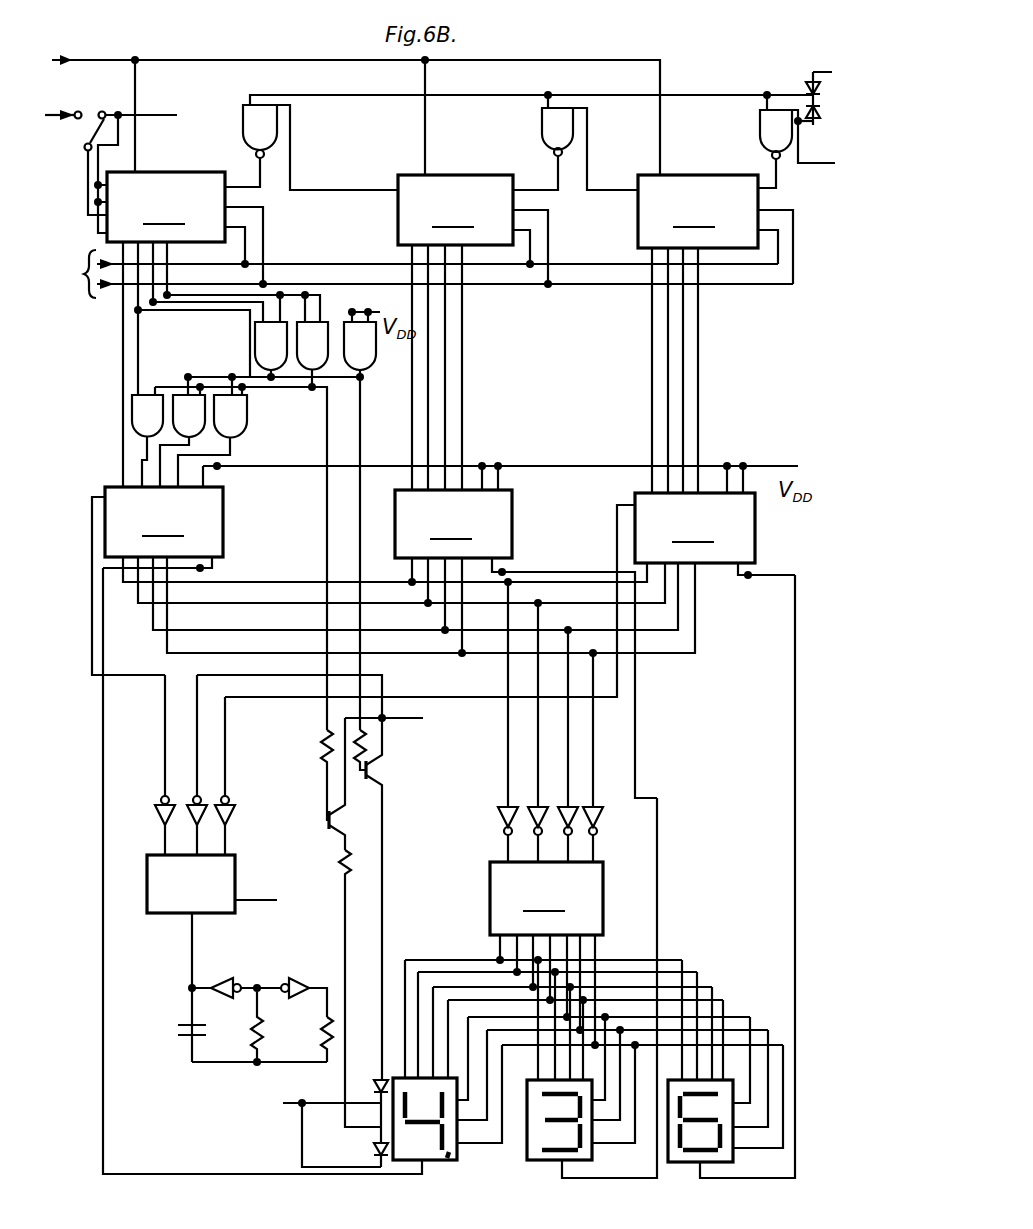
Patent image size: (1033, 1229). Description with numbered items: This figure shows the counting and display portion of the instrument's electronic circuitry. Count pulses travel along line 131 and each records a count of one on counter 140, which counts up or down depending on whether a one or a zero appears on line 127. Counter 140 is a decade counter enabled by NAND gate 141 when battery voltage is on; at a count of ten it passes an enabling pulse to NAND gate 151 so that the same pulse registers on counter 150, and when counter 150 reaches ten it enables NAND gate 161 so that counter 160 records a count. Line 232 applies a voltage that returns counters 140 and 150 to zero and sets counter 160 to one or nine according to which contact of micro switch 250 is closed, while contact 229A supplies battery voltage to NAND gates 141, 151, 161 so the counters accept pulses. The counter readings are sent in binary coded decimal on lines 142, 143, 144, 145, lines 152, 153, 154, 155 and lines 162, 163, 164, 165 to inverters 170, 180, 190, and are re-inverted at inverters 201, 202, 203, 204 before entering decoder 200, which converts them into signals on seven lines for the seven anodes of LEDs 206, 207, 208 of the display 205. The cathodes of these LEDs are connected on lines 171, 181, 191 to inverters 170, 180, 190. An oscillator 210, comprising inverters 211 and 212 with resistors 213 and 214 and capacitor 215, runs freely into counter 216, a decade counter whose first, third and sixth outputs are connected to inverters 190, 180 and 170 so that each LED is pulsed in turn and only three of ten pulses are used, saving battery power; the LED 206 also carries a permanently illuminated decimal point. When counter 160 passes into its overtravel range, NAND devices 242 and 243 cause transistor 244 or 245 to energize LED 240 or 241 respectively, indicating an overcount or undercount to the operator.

The line 232 is at (154, 60).
The normally open contacts of relay 229A is at (808, 84).
The NAND gate 161 is at (280, 124).
The NAND gate 151 is at (542, 125).
The NAND gate 141 is at (760, 125).
The counter 160 is at (187, 230).
The counter 150 is at (475, 231).
The counter 140 is at (715, 229).
The line 127 is at (347, 262).
The line 131 is at (580, 284).
The line 162 is at (123, 323).
The line 163 is at (138, 345).
The line 164 is at (153, 360).
The line 165 is at (150, 380).
The line 152 is at (412, 320).
The line 153 is at (428, 346).
The line 154 is at (445, 372).
The line 155 is at (462, 397).
The line 142 is at (652, 320).
The line 143 is at (668, 346).
The line 144 is at (683, 372).
The line 145 is at (698, 397).
The NAND device 242 is at (228, 412).
The NAND device 243 is at (190, 428).
The inverter 190 is at (393, 581).
The inverter 180 is at (526, 644).
The inverter 170 is at (510, 595).
The line 191 is at (103, 805).
The transistor 244 is at (388, 771).
The transistor 245 is at (325, 822).
The counter 216 is at (235, 892).
The oscillator 210 is at (276, 952).
The inverter 211 is at (215, 984).
The inverter 212 is at (298, 976).
The capacitor 215 is at (187, 1022).
The resistor 213 is at (243, 1040).
The resistor 214 is at (316, 1038).
The LED 240 is at (312, 1105).
The LED 241 is at (370, 1144).
The inverter 201 is at (498, 811).
The inverter 202 is at (528, 818).
The inverter 203 is at (580, 810).
The inverter 204 is at (600, 826).
The line 181 is at (657, 902).
The line 171 is at (795, 892).
The light emitting diode display 205 is at (722, 990).
The decoder 200 is at (546, 953).
The LED 206 is at (456, 1162).
The LED 207 is at (586, 1162).
The LED 208 is at (726, 1162).
The micro switch 250 is at (84, 150).